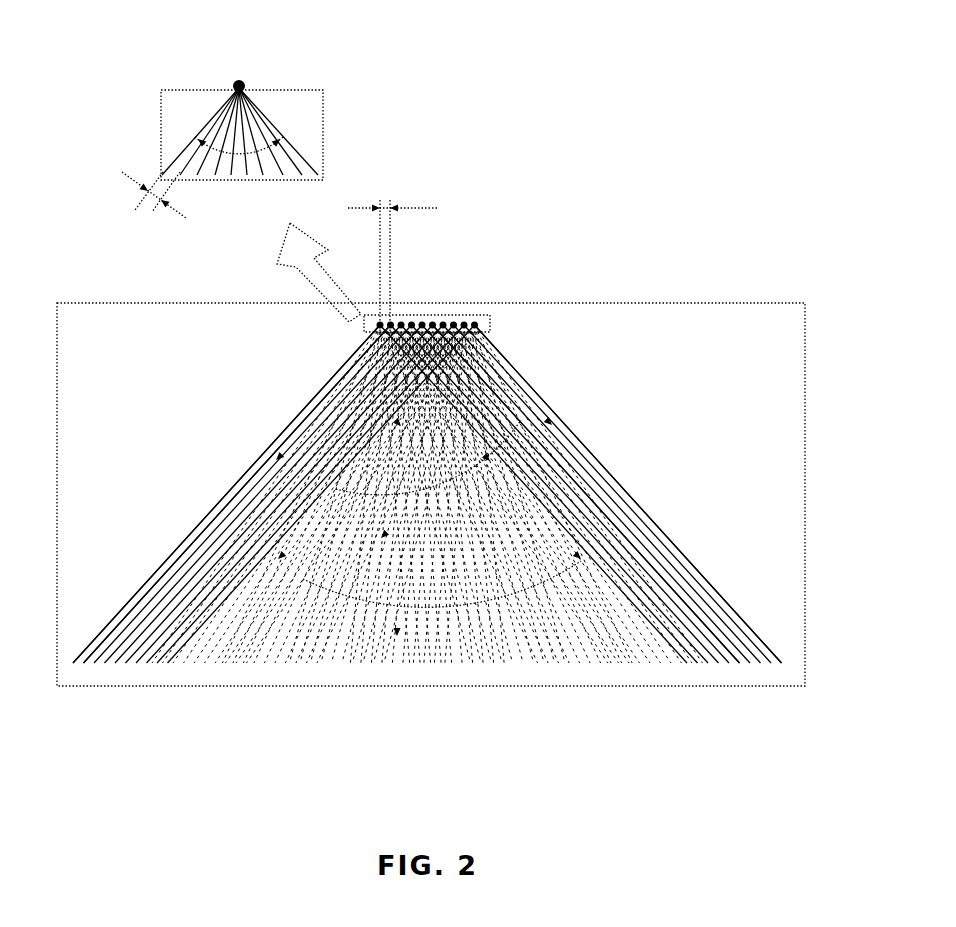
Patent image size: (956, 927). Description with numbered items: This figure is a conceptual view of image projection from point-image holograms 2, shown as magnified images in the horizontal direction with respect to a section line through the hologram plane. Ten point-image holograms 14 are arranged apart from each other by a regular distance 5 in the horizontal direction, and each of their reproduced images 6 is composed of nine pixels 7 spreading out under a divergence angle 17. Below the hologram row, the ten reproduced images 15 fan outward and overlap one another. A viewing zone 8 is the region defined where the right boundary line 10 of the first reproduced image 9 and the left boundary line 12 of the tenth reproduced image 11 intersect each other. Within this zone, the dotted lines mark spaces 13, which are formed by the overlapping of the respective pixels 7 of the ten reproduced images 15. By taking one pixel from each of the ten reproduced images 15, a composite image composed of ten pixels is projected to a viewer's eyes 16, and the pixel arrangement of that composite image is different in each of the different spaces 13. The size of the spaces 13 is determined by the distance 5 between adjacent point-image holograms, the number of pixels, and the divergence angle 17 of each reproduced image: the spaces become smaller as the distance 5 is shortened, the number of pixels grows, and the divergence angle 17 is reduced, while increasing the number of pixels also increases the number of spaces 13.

The point-image hologram 2 is at (244, 79).
The reproduced image 6 is at (308, 90).
The divergence angle 17 is at (238, 158).
The pixel 7 is at (143, 202).
The regular distance 5 is at (393, 260).
The point-image holograms 14 is at (475, 315).
The reproduced images 15 is at (619, 303).
The spaces 13 is at (343, 384).
The first reproduced image 9 is at (283, 439).
The tenth reproduced image 11 is at (572, 427).
The left boundary line 12 is at (193, 531).
The right boundary line 10 is at (665, 533).
The viewer's eyes 16 is at (403, 625).
The viewing zone 8 is at (457, 641).